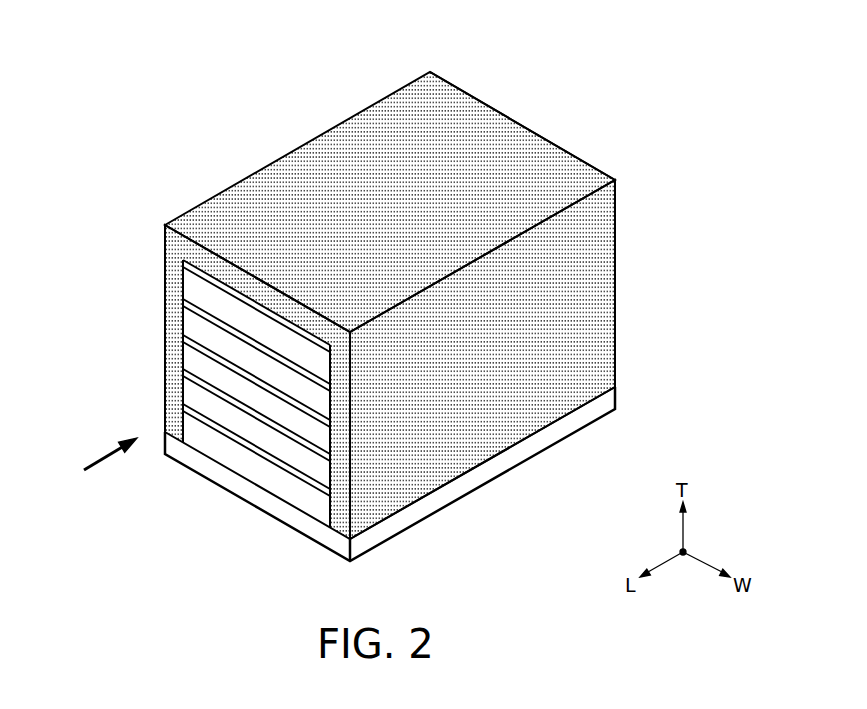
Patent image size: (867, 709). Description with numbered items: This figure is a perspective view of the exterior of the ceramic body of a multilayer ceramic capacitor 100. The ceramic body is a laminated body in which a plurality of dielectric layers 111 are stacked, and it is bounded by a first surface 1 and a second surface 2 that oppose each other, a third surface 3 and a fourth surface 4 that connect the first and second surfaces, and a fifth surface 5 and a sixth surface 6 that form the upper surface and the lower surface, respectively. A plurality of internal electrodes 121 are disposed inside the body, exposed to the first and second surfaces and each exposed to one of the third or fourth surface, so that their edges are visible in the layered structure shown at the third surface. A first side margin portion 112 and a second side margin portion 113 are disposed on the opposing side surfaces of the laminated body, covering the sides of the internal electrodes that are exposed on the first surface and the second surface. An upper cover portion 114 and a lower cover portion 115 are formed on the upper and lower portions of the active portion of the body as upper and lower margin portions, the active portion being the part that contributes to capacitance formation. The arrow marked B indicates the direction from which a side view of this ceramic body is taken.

The multilayer ceramic capacitor 100 is at (242, 40).
The first surface 1 is at (263, 197).
The second surface 2 is at (590, 348).
The third surface 3 is at (220, 434).
The fourth surface 4 is at (520, 148).
The fifth surface 5 is at (390, 131).
The sixth surface 6 is at (498, 452).
The dielectric layers 111 is at (207, 365).
The first side margin portion 112 is at (167, 415).
The second side margin portion 113 is at (380, 534).
The upper cover portion 114 is at (205, 262).
The lower cover portion 115 is at (257, 495).
The internal electrode 121 is at (197, 350).
The direction B is at (98, 466).